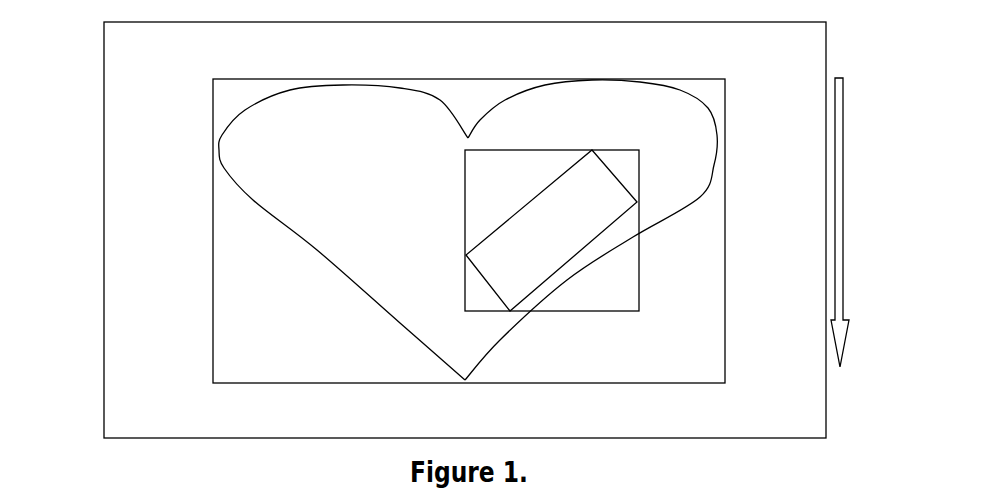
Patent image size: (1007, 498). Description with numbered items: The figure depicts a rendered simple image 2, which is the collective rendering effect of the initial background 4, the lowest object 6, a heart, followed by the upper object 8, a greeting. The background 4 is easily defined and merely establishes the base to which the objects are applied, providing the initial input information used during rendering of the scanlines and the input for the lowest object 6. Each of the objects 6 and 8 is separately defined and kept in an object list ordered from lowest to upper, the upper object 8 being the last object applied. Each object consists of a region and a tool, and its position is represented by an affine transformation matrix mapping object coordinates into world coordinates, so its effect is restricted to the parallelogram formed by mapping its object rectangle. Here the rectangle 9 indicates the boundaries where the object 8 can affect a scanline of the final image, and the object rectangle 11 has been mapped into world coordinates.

The image 2 is at (92, 82).
The initial background 4 is at (783, 57).
The lowest object 6 is at (690, 77).
The upper object 8 is at (613, 289).
The rectangle 9 is at (467, 240).
The object rectangle 11 is at (520, 211).